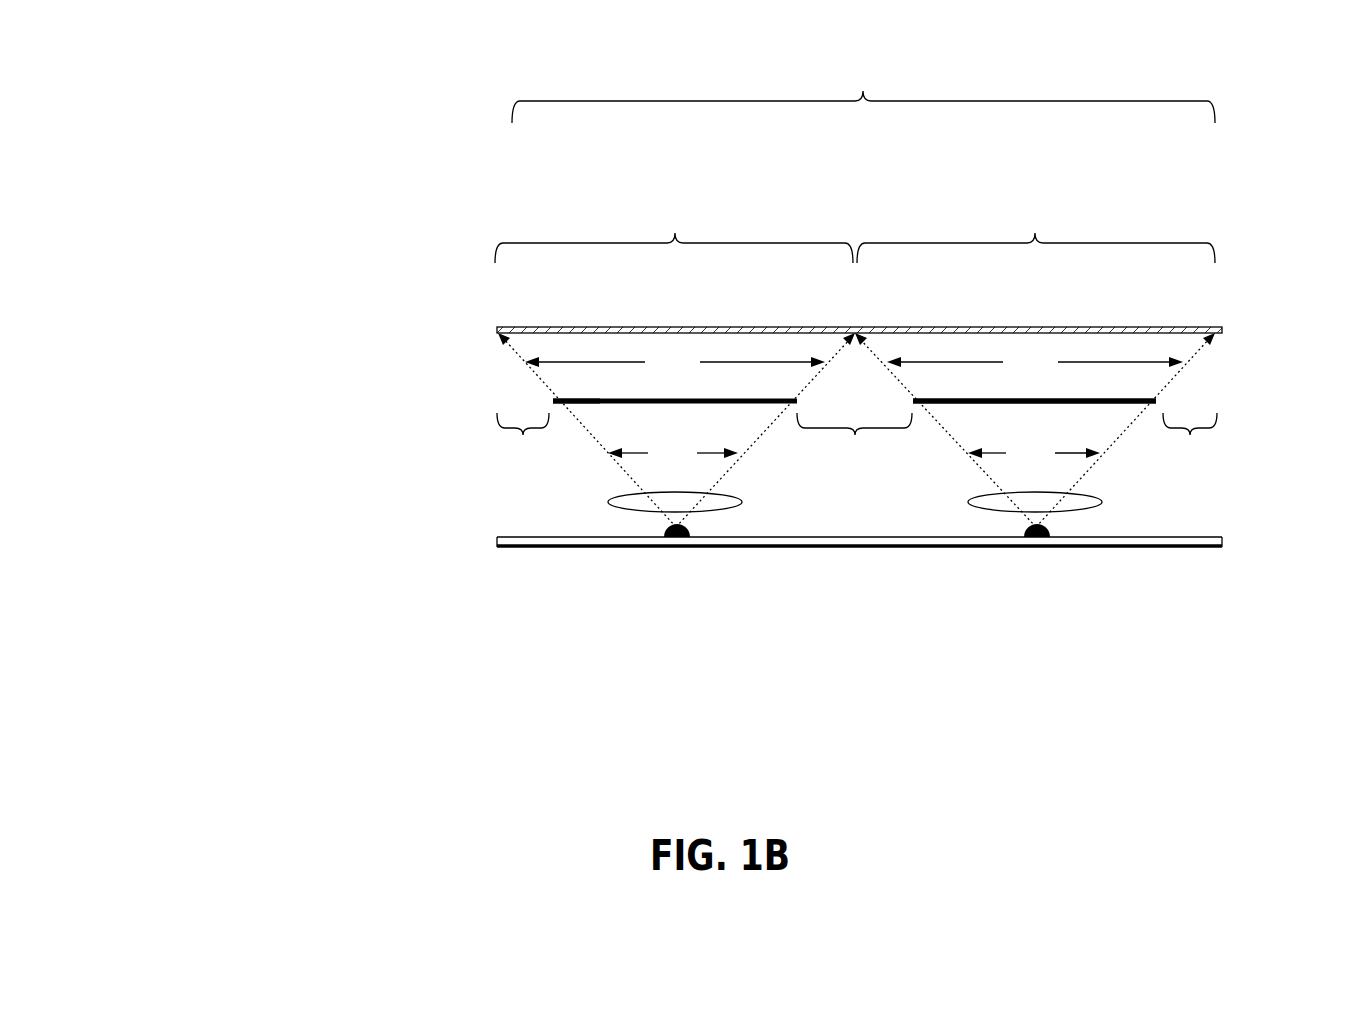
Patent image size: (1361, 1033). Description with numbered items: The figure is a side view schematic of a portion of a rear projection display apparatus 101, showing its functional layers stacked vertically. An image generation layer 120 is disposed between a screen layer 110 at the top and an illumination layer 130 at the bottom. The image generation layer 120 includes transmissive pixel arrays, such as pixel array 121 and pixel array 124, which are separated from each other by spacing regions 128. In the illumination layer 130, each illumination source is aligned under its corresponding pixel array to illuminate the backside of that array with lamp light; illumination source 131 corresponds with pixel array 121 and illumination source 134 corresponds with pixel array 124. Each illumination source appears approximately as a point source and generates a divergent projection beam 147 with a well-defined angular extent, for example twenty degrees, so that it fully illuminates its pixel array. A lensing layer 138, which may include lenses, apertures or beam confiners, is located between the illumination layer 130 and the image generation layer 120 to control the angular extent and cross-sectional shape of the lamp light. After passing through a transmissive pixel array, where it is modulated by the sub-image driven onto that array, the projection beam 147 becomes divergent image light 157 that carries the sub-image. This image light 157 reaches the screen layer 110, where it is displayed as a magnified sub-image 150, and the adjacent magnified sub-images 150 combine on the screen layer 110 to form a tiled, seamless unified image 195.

The display apparatus 101 is at (416, 222).
The screen layer 110 is at (432, 330).
The image generation layer 120 is at (440, 400).
The transmissive pixel array 121 is at (553, 401).
The transmissive pixel array 124 is at (1157, 401).
The spacing regions 128 is at (857, 443).
The illumination layer 130 is at (478, 548).
The illumination source 131 is at (677, 540).
The illumination source 134 is at (1037, 540).
The lensing layer 138 is at (742, 503).
The projection beam 147 is at (854, 453).
The magnified sub-image 150 is at (855, 211).
The image light 157 is at (854, 362).
The unified image 195 is at (863, 74).